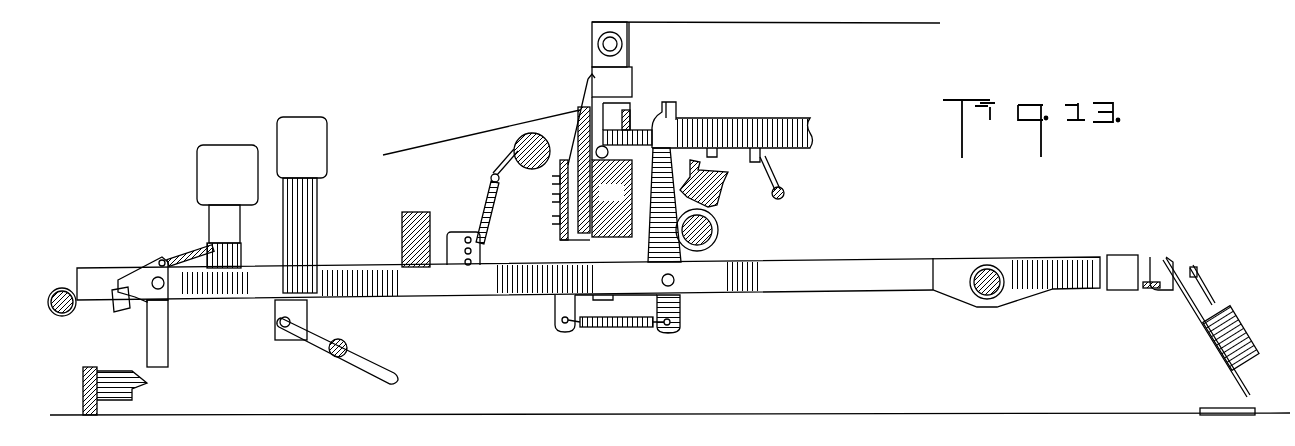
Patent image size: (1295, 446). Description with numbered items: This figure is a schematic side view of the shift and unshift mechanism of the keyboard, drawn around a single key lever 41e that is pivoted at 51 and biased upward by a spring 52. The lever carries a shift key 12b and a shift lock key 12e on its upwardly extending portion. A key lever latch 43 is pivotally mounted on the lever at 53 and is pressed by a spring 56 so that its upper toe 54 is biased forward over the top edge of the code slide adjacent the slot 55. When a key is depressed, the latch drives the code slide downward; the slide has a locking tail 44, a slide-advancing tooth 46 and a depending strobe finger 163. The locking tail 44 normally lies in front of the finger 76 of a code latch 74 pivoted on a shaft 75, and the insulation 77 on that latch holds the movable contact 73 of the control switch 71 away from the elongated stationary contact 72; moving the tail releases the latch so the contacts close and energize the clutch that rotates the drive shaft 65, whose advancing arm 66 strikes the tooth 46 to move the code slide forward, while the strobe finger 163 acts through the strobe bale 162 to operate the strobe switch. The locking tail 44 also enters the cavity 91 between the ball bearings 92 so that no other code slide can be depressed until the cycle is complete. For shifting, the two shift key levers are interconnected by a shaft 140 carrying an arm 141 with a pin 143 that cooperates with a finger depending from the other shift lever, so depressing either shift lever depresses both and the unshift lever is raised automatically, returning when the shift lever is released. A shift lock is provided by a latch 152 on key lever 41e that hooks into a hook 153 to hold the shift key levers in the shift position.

The shift key 12b is at (205, 162).
The shift lock key 12e is at (320, 137).
The key lever 41e is at (333, 280).
The latch 152 is at (168, 333).
The hook 153 is at (143, 385).
The pin 143 is at (286, 338).
The arm 141 is at (312, 345).
The shaft 140 is at (338, 360).
The spring 52 is at (490, 201).
The ball bearings 92 is at (560, 180).
The cavity 91 is at (560, 197).
The stationary contact 72 is at (560, 220).
The control switch 71 is at (562, 248).
The movable contact 73 is at (567, 128).
The finger 76 is at (600, 118).
The code latch 74 is at (592, 60).
The shaft 75 is at (598, 42).
The insulation 77 is at (630, 73).
The slot 55 is at (642, 128).
The locking tail 44 is at (612, 191).
The upper toe 54 is at (677, 108).
The slide-advancing tooth 46 is at (712, 148).
The strobe finger 163 is at (755, 157).
The strobe bale 162 is at (777, 185).
The drive shaft 65 is at (717, 192).
The advancing arm 66 is at (713, 209).
The pivot 53 is at (675, 277).
The key lever latch 43 is at (684, 305).
The spring 56 is at (625, 329).
The pivot 51 is at (982, 268).